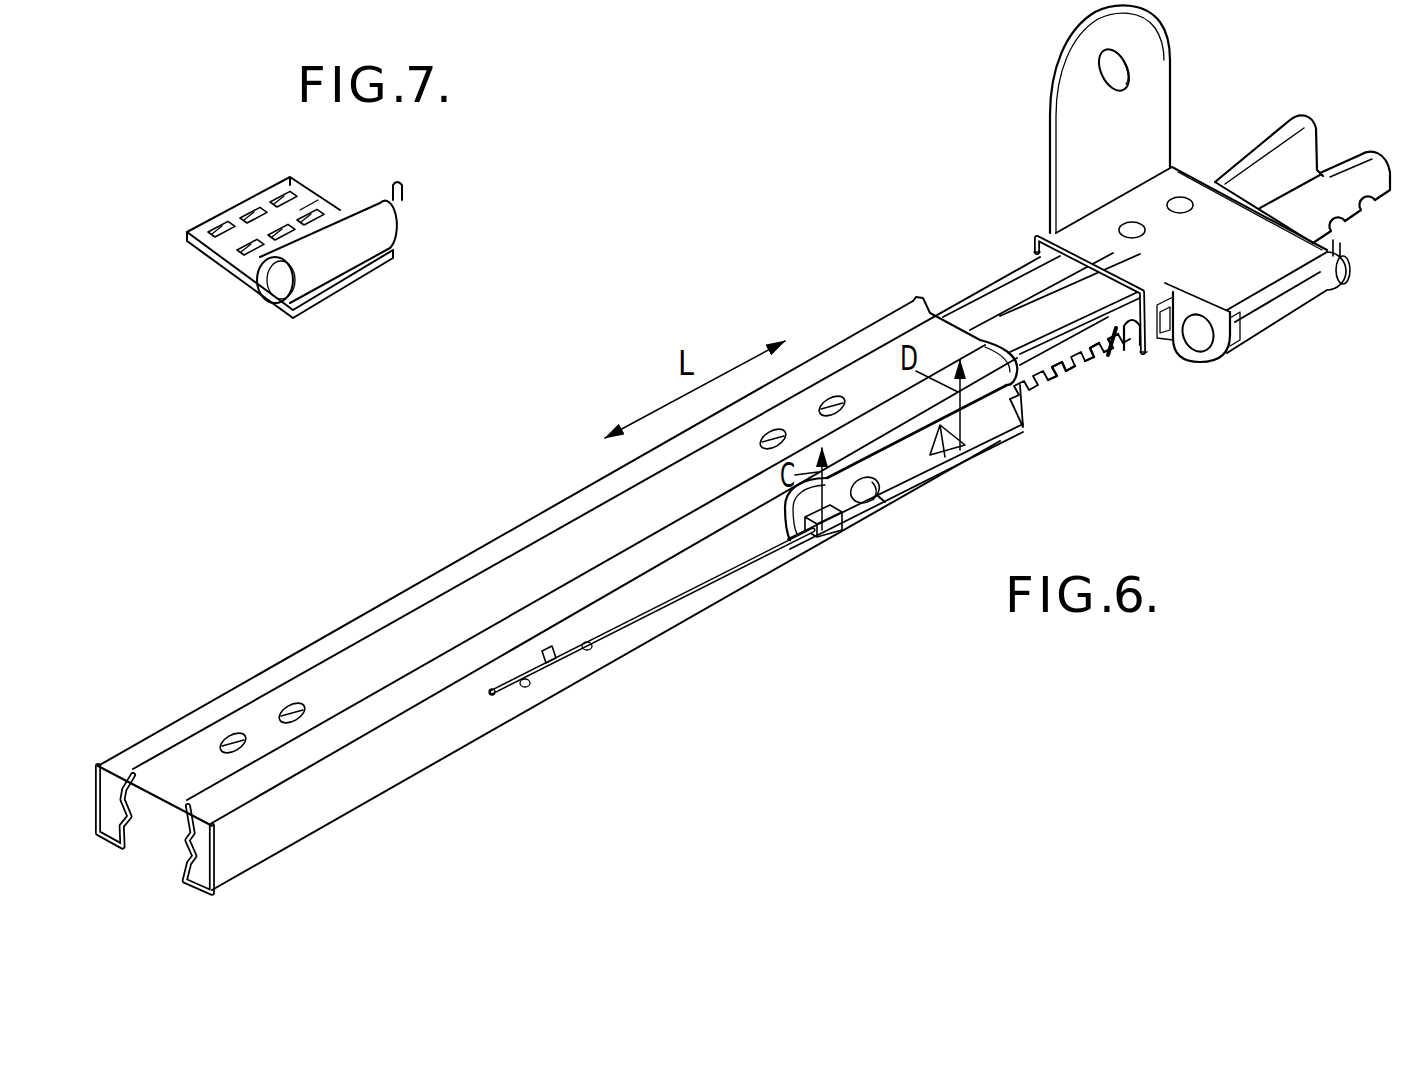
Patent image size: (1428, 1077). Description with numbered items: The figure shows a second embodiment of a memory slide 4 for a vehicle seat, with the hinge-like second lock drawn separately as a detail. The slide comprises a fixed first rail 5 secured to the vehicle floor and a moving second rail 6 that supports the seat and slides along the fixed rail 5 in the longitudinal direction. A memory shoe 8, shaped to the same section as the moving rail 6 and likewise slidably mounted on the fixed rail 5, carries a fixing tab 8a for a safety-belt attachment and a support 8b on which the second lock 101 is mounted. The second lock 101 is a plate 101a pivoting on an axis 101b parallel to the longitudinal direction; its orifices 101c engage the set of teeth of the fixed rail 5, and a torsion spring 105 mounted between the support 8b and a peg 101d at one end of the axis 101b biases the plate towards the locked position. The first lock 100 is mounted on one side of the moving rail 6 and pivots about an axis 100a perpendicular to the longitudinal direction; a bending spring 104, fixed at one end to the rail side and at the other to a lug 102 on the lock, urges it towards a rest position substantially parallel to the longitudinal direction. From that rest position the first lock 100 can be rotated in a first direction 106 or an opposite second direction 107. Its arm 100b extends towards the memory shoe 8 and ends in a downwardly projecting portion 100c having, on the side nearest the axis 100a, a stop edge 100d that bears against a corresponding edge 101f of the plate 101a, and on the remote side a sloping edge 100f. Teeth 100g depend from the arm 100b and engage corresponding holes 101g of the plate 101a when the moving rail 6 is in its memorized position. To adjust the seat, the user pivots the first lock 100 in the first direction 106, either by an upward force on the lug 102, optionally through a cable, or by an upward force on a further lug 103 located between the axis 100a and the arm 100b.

In FIG. 6, the memory slide 4 is at (742, 603).
In FIG. 6, the fixed first rail 5 is at (1290, 135).
In FIG. 6, the moving second rail 6 is at (340, 683).
In FIG. 6, the memory shoe 8 is at (1169, 183).
In FIG. 6, the fixing tab 8a is at (1077, 57).
In FIG. 6, the support 8b is at (1210, 233).
In FIG. 6, the first lock 100 is at (1023, 427).
In FIG. 6, the axis 100a is at (880, 500).
In FIG. 6, the arm 100b is at (1015, 330).
In FIG. 6, the projecting portion 100c is at (1100, 368).
In FIG. 6, the stop edge 100d is at (1097, 368).
In FIG. 6, the sloping edge 100f is at (1120, 355).
In FIG. 6, the teeth 100g is at (1067, 380).
In FIG. 6, the second lock 101 is at (1287, 320).
In FIG. 7, the second lock 101 is at (308, 240).
In FIG. 7, the plate 101a is at (247, 253).
In FIG. 7, the axis 101b is at (323, 250).
In FIG. 7, the orifices 101c is at (250, 210).
In FIG. 7, the peg 101d is at (403, 187).
In FIG. 7, the edge 101f is at (317, 203).
In FIG. 7, the holes 101g is at (310, 213).
In FIG. 6, the lug 102 is at (813, 517).
In FIG. 6, the lug 103 is at (977, 453).
In FIG. 6, the bending spring 104 is at (640, 613).
In FIG. 6, the torsion spring 105 is at (1343, 277).
In FIG. 6, the first direction 106 is at (800, 567).
In FIG. 6, the second direction 107 is at (1178, 413).